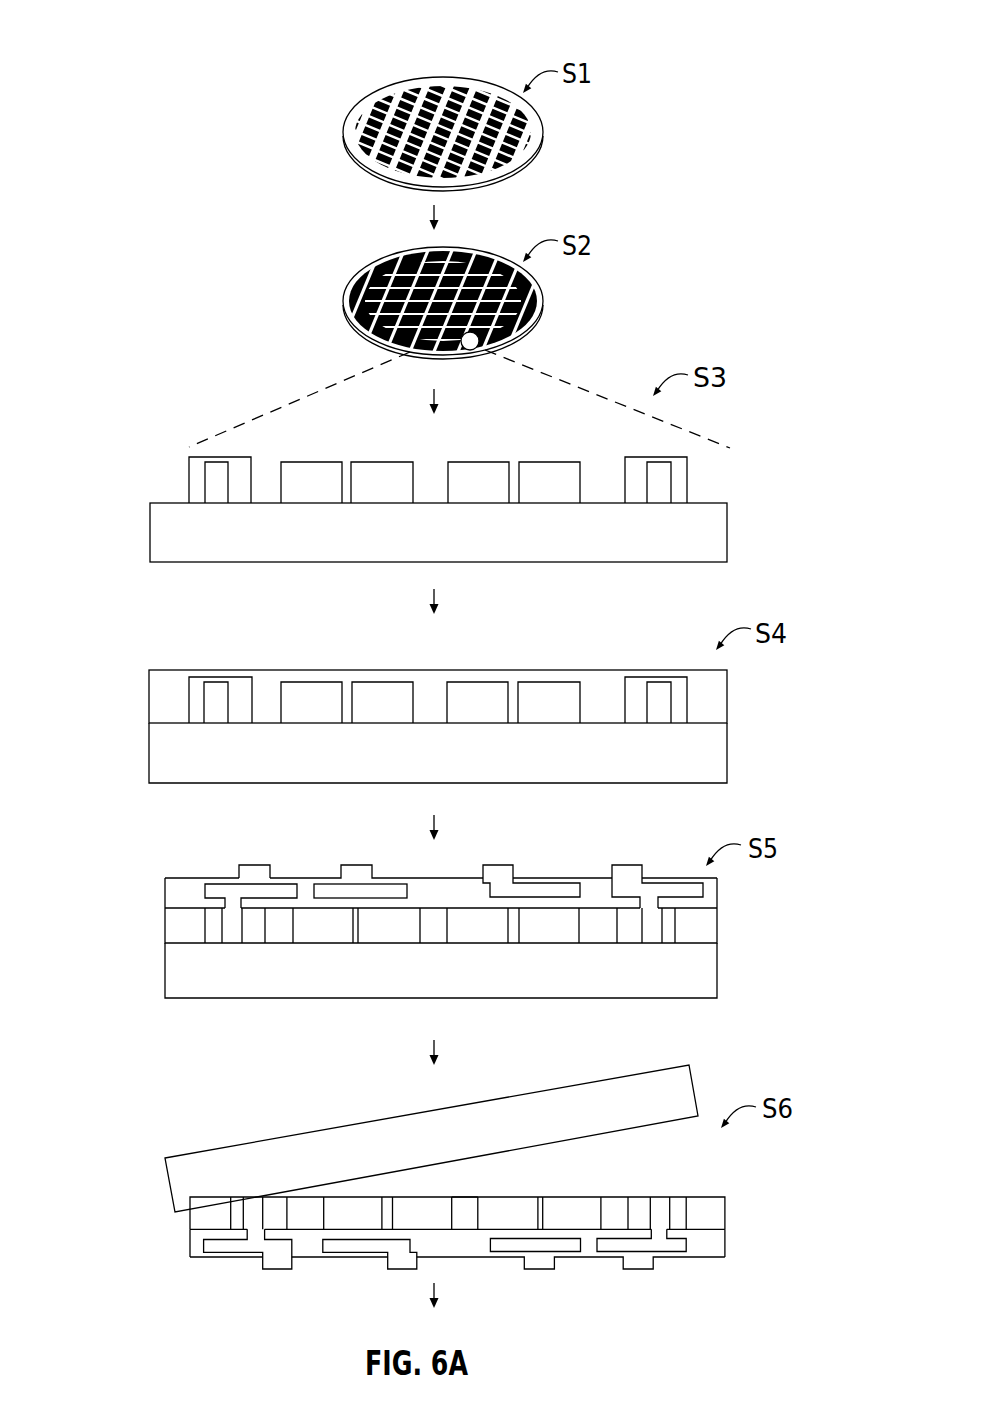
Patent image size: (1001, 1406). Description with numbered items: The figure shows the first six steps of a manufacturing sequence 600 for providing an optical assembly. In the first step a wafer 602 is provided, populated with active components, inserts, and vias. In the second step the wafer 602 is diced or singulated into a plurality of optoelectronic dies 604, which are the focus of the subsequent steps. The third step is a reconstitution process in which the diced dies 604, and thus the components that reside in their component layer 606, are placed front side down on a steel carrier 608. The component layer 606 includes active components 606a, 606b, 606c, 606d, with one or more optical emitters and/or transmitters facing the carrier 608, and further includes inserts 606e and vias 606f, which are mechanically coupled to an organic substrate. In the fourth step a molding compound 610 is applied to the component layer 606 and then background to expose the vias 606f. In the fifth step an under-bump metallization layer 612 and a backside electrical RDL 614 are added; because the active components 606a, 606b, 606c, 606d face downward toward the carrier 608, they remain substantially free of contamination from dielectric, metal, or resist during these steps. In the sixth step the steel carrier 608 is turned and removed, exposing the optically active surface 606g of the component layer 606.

The manufacturing sequence 600 is at (120, 26).
The wafer 602 is at (366, 102).
The optoelectronic dies 604 is at (372, 272).
The component layer 606 is at (183, 502).
The active component 606a is at (548, 462).
The active component 606b is at (477, 462).
The active component 606c is at (375, 463).
The active component 606d is at (312, 462).
The inserts 606e is at (687, 490).
The vias 606f is at (217, 461).
The optically active surface 606g is at (547, 1172).
The steel carrier 608 is at (149, 540).
The molding compound 610 is at (149, 697).
The under-bump metallization layer 612 is at (165, 897).
The backside electrical RDL 614 is at (255, 865).